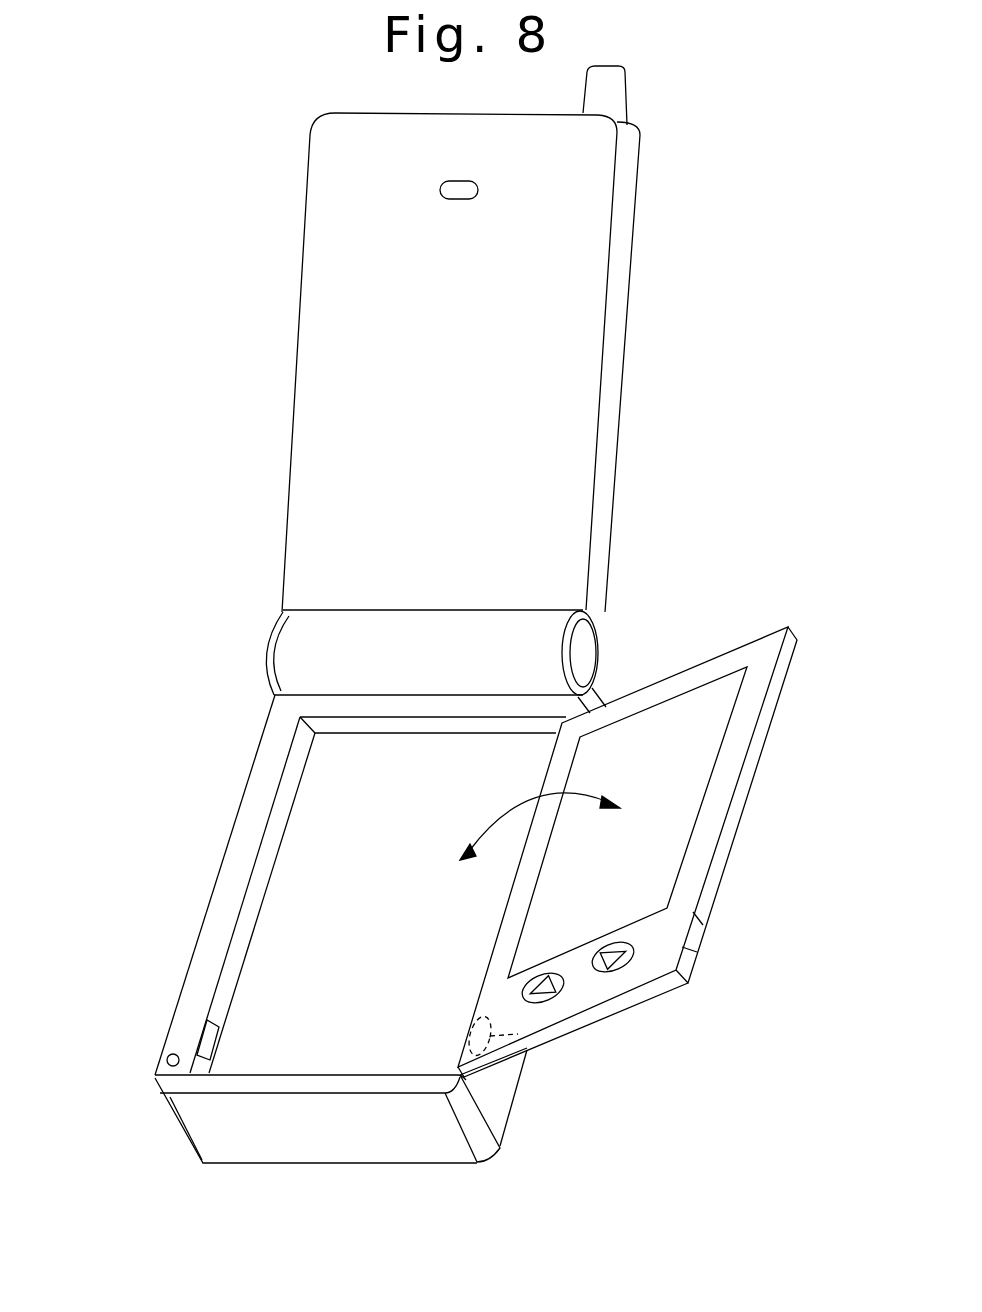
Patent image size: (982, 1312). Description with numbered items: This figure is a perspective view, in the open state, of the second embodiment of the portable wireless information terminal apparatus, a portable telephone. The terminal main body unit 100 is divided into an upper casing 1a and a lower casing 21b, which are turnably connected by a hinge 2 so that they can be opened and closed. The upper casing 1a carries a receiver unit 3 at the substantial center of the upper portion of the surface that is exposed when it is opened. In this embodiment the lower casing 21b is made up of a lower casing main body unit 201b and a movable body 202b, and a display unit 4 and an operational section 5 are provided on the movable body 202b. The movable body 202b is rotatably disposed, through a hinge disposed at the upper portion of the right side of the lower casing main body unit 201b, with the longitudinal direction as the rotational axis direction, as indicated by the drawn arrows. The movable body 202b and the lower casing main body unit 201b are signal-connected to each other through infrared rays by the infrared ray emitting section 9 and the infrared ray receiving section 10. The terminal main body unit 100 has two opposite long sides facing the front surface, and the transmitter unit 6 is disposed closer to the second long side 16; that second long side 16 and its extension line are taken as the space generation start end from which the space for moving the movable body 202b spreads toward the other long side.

The terminal main body unit 100 is at (237, 541).
The upper casing 1a is at (587, 287).
The receiver unit 3 is at (477, 183).
The hinge 2 is at (298, 660).
The movable body 202b is at (752, 655).
The display unit 4 is at (680, 798).
The operational section 5 is at (625, 967).
The infrared ray emitting section 9 is at (705, 925).
The second long side 16 is at (233, 858).
The infrared ray receiving section 10 is at (202, 1034).
The transmitter unit 6 is at (165, 1064).
The lower casing 21b is at (305, 1135).
The lower casing main body unit 201b is at (413, 1125).